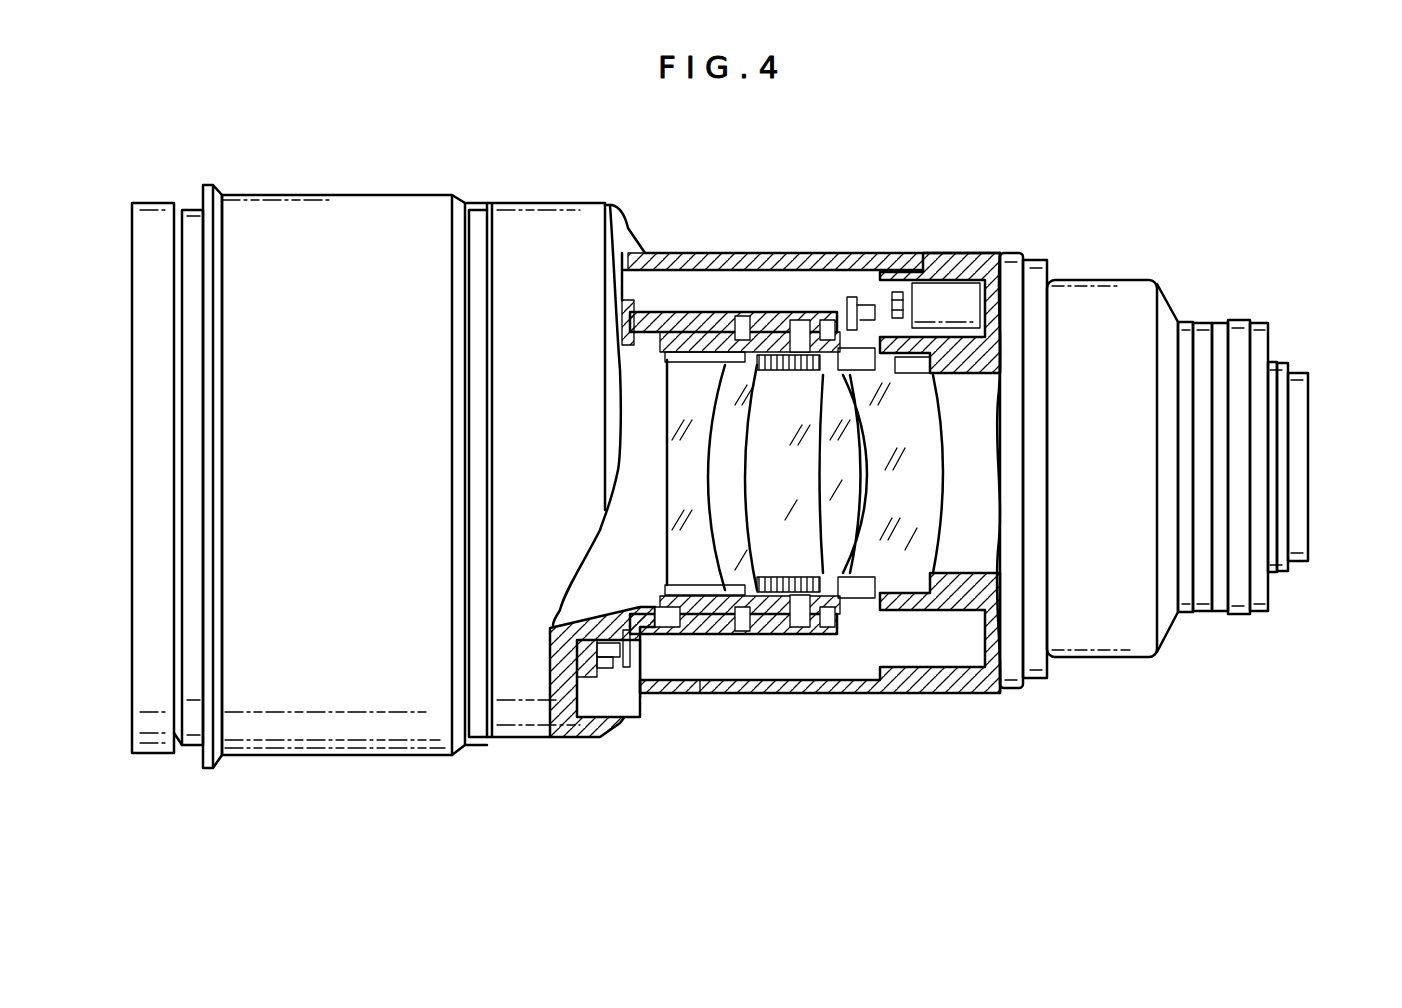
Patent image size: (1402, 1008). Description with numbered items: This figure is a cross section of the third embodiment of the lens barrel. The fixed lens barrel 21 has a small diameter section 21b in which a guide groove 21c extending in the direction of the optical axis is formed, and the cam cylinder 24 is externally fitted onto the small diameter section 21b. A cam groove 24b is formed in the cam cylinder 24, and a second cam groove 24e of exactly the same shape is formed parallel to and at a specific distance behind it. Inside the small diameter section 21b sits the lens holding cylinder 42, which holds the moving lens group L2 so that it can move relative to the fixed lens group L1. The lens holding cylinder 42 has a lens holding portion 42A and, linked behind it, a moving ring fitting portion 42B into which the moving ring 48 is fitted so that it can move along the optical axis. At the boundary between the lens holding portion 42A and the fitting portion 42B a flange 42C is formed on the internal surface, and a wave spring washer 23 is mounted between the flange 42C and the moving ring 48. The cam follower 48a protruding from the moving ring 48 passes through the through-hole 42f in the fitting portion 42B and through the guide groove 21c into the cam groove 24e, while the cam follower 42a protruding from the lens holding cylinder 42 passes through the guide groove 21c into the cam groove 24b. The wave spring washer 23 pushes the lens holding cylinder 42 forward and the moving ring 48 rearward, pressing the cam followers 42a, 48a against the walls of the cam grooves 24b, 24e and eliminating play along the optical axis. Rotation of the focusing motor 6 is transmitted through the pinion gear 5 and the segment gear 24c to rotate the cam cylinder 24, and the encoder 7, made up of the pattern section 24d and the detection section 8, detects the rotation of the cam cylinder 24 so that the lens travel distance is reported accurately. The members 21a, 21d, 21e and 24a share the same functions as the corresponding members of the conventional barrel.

The fixed lens barrel 21 is at (548, 213).
The cam cylinder member 24a is at (667, 310).
The lens holding portion 42A is at (710, 312).
The cam cylinder 24 is at (700, 310).
The cam groove 24b is at (745, 310).
The wave spring washer 23 is at (800, 310).
The cam groove 24e is at (830, 310).
The moving ring 48 is at (848, 297).
The pinion gear 5 is at (877, 253).
The focusing motor 6 is at (965, 303).
The fixed lens barrel member 21a is at (1292, 365).
The flange 42C is at (747, 390).
The moving ring fitting portion 42B is at (845, 377).
The fixed lens group L1 is at (827, 435).
The moving lens group L2 is at (738, 536).
The detection section 8 is at (500, 738).
The pattern section 24d is at (582, 737).
The encoder 7 is at (597, 810).
The fixed lens barrel member 21e is at (673, 634).
The lens holding cylinder 42 is at (693, 634).
The small diameter section 21b is at (708, 634).
The cam follower 42a is at (740, 634).
The guide groove 21c is at (773, 634).
The through-hole 42f is at (797, 634).
The cam follower 48a is at (817, 634).
The segment gear 24c is at (847, 634).
The fixed lens barrel member 21d is at (905, 695).